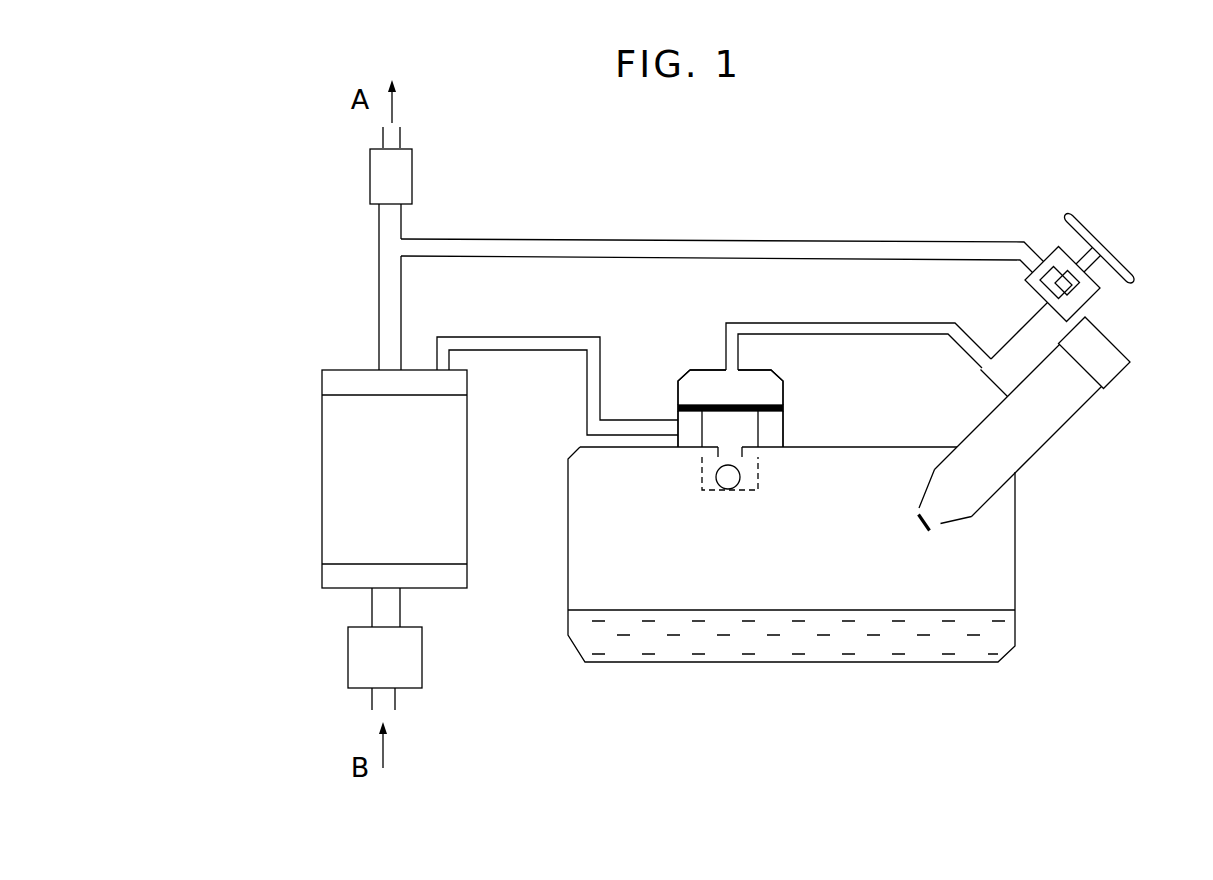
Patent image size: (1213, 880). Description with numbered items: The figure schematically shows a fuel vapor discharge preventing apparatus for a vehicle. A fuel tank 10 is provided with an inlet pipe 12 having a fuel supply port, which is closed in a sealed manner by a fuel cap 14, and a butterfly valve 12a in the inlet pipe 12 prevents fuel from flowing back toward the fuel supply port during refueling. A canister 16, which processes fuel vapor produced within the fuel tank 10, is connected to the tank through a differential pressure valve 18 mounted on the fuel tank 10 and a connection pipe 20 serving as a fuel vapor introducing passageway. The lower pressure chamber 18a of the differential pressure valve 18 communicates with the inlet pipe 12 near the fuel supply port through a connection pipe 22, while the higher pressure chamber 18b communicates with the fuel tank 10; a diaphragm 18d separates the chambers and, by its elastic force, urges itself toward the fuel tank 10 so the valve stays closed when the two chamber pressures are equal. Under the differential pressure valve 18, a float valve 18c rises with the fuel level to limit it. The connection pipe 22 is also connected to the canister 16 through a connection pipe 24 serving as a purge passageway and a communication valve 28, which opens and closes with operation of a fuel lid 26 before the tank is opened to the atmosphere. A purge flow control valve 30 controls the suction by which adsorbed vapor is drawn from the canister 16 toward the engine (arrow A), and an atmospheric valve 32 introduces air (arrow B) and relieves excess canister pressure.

The fuel tank 10 is at (873, 686).
The inlet pipe 12 is at (1048, 443).
The butterfly valve 12a is at (918, 515).
The fuel cap 14 is at (1122, 373).
The canister 16 is at (322, 525).
The differential pressure valve 18 is at (753, 422).
The lower pressure chamber 18a is at (757, 381).
The higher pressure chamber 18b is at (742, 430).
The float valve 18c is at (752, 498).
The diaphragm 18d is at (765, 403).
The connection pipe 20 is at (535, 337).
The connection pipe 22 is at (828, 323).
The connection pipe 24 is at (826, 240).
The fuel lid 26 is at (1087, 228).
The communication valve 28 is at (1041, 226).
The purge flow control valve 30 is at (413, 165).
The atmospheric valve 32 is at (348, 652).